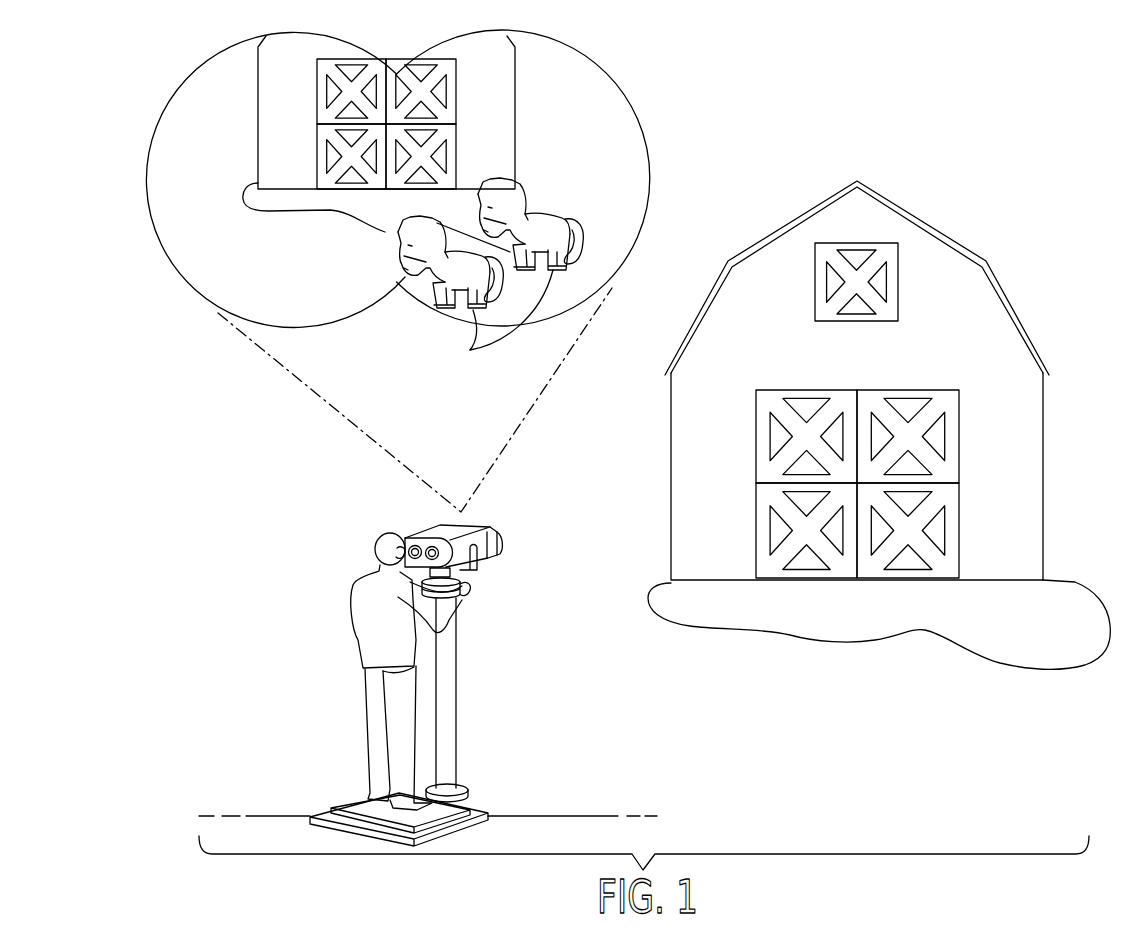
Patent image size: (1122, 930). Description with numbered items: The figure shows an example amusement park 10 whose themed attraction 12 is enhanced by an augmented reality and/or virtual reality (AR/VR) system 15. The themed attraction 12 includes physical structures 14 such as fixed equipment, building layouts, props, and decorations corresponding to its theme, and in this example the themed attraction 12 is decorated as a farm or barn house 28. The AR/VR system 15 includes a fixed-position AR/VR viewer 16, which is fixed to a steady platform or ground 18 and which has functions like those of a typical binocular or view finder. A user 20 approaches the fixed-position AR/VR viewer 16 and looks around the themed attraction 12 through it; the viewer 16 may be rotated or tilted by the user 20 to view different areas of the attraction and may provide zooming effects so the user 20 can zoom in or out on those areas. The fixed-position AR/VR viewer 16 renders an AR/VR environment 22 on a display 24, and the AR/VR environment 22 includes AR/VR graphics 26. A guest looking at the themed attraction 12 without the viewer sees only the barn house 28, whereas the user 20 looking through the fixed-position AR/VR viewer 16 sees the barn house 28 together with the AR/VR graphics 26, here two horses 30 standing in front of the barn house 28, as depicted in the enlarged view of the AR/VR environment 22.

The amusement park 10 is at (120, 87).
The themed attraction 12 is at (777, 191).
The physical structures 14 is at (532, 92).
The AR/VR system 15 is at (524, 464).
The fixed-position AR/VR viewer 16 is at (538, 557).
The ground 18 is at (275, 816).
The user 20 is at (327, 544).
The AR/VR environment 22 is at (603, 70).
The display 24 is at (429, 542).
The AR/VR graphics 26 is at (553, 193).
The barn house 28 is at (1043, 478).
The horses 30 is at (470, 350).